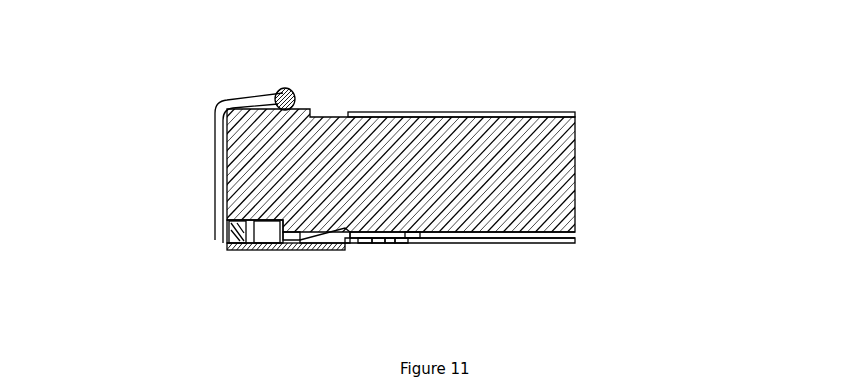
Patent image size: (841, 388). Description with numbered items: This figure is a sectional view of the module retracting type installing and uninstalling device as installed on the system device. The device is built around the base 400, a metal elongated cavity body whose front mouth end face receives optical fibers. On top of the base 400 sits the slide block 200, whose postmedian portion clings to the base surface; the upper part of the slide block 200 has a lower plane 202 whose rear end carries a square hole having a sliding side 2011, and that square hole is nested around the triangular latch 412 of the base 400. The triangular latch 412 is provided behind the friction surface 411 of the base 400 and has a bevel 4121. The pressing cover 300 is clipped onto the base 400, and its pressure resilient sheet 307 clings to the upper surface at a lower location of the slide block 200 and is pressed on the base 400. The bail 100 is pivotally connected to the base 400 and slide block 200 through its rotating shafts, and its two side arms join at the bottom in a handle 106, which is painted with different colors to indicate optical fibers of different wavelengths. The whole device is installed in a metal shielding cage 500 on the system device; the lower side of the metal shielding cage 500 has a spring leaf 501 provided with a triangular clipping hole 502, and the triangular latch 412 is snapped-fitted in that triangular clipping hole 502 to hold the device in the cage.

The bail 100 is at (197, 155).
The handle 106 is at (283, 90).
The base 400 is at (321, 97).
The slide block 200 is at (226, 242).
The pressing cover 300 is at (262, 252).
The friction surface 411 is at (291, 250).
The pressure resilient sheet 307 is at (322, 250).
The lower plane 202 is at (336, 250).
The sliding side 2011 is at (408, 240).
The metal shielding cage 500 is at (505, 246).
The spring leaf 501 is at (368, 245).
The triangular clipping hole 502 is at (399, 245).
The triangular latch 412 is at (381, 245).
The bevel 4121 is at (378, 245).